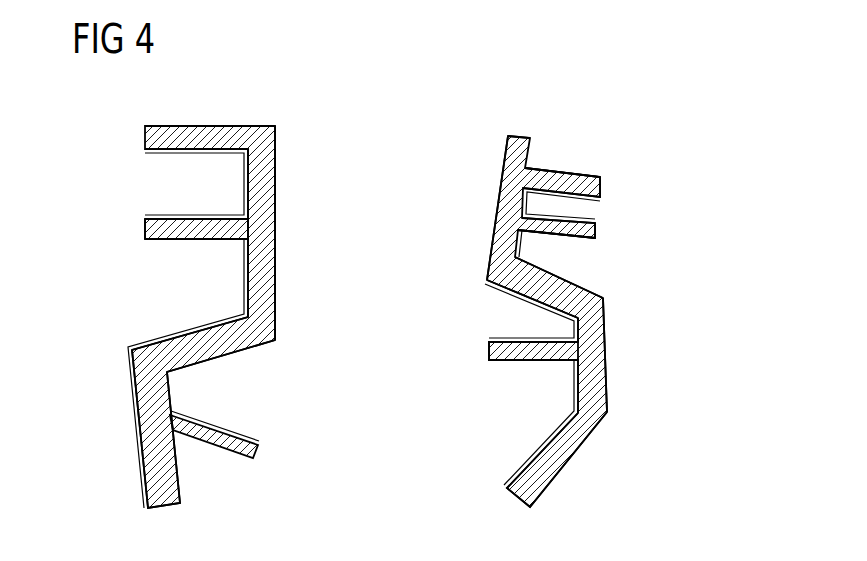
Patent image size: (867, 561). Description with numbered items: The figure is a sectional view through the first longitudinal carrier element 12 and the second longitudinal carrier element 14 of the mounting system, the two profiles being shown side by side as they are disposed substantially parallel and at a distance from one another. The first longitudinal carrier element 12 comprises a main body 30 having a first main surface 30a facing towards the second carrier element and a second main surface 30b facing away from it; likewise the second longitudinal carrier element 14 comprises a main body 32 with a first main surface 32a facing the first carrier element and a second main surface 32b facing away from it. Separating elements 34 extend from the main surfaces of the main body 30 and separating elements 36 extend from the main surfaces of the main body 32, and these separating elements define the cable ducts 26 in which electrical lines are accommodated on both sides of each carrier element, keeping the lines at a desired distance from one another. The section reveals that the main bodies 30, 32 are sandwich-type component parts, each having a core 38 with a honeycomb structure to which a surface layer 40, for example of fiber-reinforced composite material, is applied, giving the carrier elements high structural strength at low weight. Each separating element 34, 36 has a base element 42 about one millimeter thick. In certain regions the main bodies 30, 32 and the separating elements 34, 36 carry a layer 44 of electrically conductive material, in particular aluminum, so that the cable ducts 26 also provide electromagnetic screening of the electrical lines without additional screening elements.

The first longitudinal carrier element 12 is at (211, 122).
The second longitudinal carrier element 14 is at (528, 122).
The cable duct 26 is at (512, 423).
The main body 30 is at (254, 190).
The first main surface 30a is at (276, 221).
The second main surface 30b is at (244, 282).
The main body 32 is at (588, 308).
The first main surface 32a is at (490, 233).
The second main surface 32b is at (533, 153).
The separating element 34 is at (260, 452).
The separating element 36 is at (488, 355).
The core 38 is at (603, 383).
The surface layer 40 is at (568, 448).
The base element 42 is at (530, 364).
The layer 44 is at (522, 298).